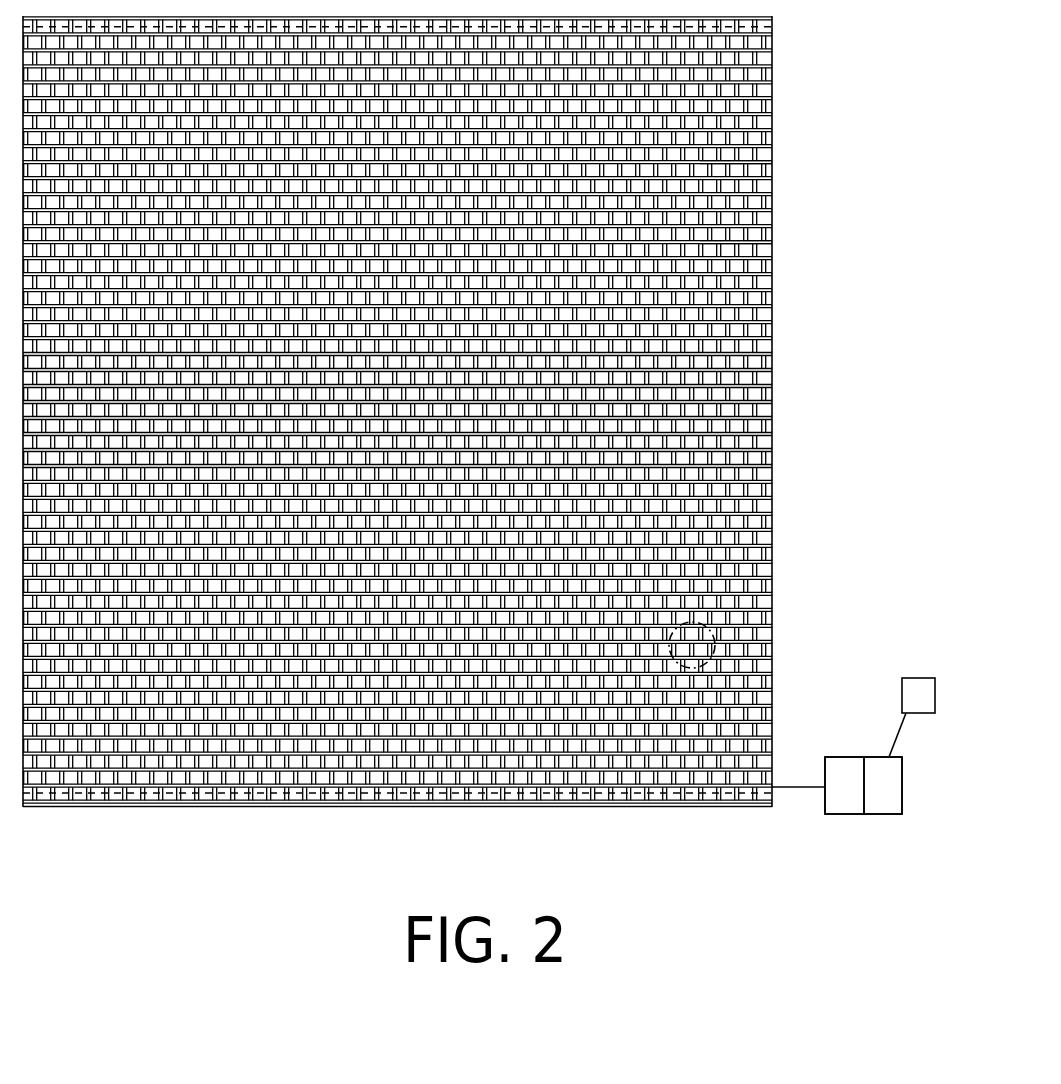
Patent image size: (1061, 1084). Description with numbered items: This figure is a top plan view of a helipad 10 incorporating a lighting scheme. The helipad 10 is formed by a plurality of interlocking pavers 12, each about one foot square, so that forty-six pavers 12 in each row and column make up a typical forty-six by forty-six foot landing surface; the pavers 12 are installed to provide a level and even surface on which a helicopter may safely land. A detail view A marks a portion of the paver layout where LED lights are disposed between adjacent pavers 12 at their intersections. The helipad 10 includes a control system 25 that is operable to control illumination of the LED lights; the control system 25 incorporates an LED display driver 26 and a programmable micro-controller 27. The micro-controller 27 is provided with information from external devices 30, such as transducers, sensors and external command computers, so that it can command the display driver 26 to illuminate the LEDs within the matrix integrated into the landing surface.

The helipad 10 is at (779, 295).
The paver 12 is at (765, 237).
The detail view A is at (712, 634).
The control system 25 is at (839, 773).
The LED display driver 26 is at (840, 808).
The programmable micro-controller 27 is at (895, 808).
The external devices 30 is at (916, 677).